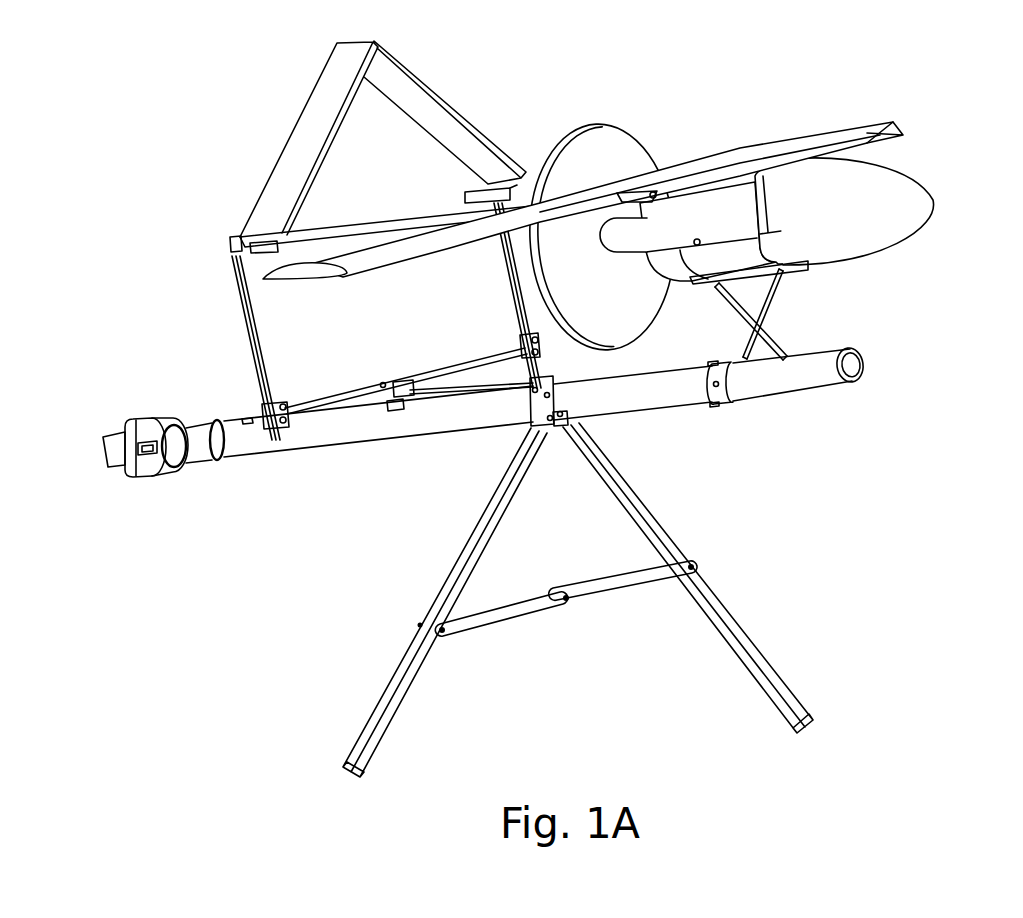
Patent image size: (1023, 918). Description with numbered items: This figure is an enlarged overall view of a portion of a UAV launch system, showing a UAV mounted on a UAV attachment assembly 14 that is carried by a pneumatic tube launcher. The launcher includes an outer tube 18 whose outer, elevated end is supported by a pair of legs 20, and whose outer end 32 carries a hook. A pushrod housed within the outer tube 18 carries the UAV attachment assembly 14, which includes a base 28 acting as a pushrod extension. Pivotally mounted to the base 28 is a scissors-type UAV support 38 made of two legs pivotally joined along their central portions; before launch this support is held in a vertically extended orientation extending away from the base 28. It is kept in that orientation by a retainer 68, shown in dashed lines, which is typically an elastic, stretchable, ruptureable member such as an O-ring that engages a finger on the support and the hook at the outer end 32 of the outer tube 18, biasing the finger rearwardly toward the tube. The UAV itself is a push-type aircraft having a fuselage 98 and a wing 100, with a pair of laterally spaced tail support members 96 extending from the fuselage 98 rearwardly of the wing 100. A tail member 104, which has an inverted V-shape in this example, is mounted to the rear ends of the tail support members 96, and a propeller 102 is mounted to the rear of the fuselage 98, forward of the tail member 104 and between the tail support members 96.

The UAV attachment assembly 14 is at (897, 337).
The outer tube 18 is at (353, 428).
The legs 20 is at (440, 588).
The base 28 is at (838, 390).
The outer end 32 is at (676, 391).
The scissors-type UAV support 38 is at (794, 313).
The retainer 68 is at (762, 399).
The tail support members 96 is at (706, 149).
The fuselage 98 is at (891, 202).
The wing 100 is at (855, 120).
The propeller 102 is at (277, 352).
The tail member 104 is at (437, 87).